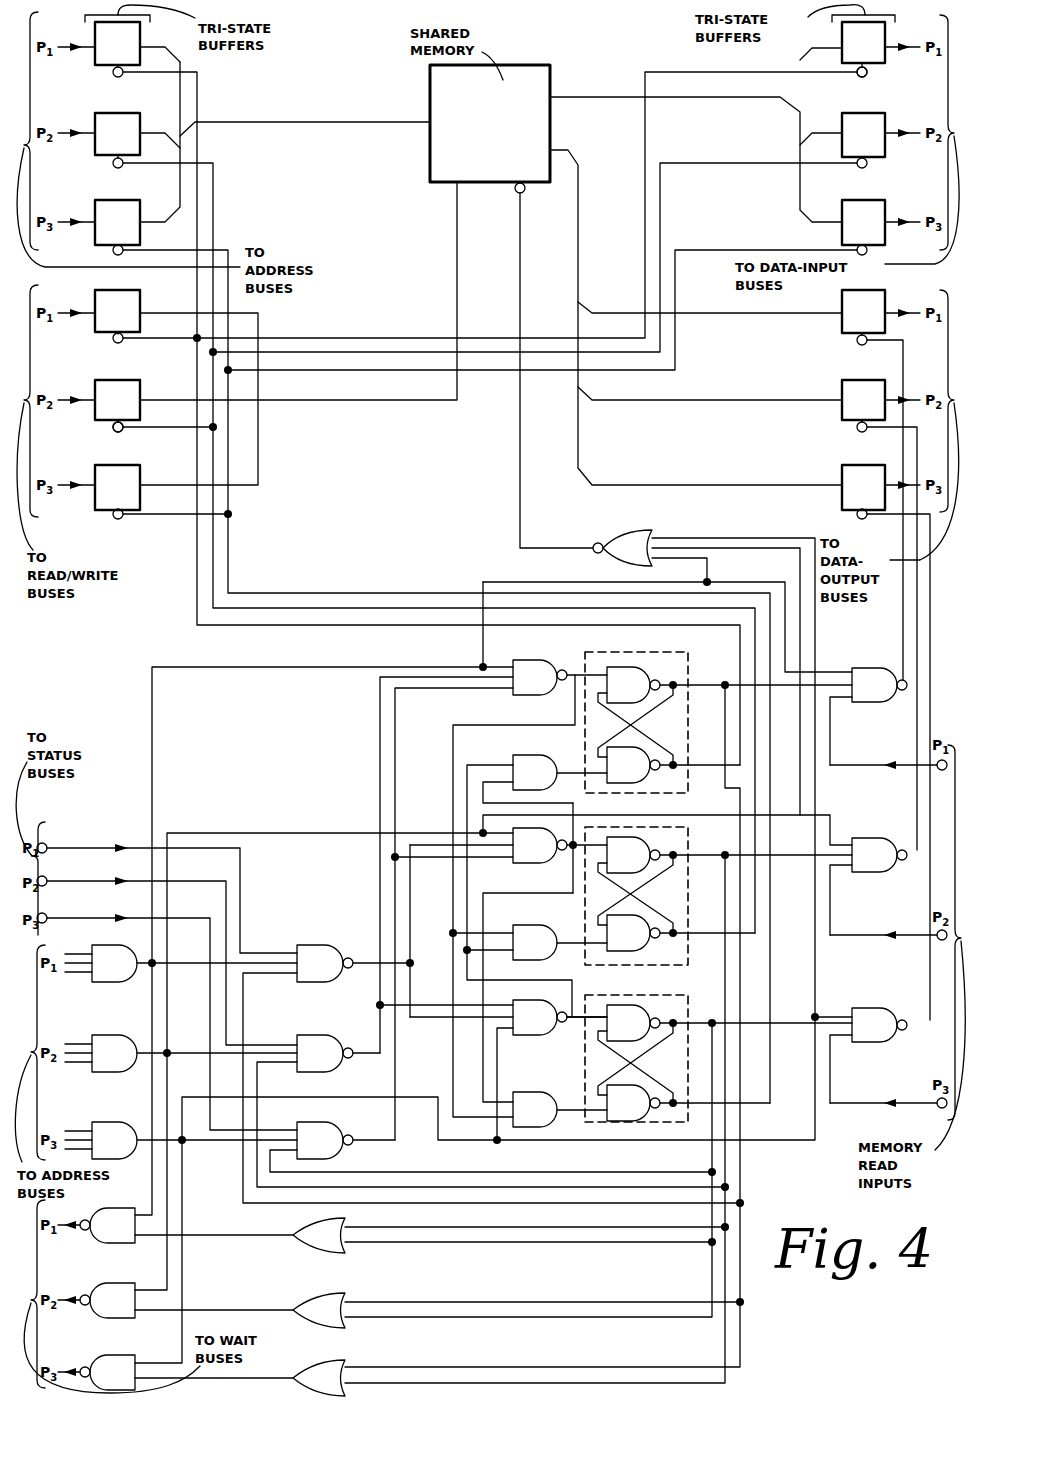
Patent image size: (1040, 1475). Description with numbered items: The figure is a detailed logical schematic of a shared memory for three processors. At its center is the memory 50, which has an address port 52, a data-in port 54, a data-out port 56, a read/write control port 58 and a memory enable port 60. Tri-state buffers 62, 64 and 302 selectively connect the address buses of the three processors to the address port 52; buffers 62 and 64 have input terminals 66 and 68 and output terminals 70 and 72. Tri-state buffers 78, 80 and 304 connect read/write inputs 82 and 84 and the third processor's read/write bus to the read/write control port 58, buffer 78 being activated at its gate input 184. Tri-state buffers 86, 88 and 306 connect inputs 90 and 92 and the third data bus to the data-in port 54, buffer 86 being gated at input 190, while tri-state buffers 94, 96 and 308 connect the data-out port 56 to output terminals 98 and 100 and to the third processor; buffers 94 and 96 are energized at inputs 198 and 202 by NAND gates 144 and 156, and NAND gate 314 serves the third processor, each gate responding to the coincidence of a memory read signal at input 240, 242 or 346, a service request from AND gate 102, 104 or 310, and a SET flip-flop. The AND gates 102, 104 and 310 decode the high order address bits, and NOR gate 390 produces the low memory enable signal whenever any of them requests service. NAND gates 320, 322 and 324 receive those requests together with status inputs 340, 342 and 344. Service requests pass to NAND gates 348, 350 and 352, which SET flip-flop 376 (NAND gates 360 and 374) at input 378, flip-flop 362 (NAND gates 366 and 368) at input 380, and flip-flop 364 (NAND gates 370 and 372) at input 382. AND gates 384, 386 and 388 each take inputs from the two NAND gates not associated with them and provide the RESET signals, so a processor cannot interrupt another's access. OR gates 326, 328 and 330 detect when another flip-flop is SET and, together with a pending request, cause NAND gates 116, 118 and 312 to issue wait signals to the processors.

The memory 50 is at (490, 123).
The address port 52 is at (421, 120).
The data-in port 54 is at (552, 96).
The data-out port 56 is at (552, 150).
The read/write control port 58 is at (455, 186).
The memory enable port 60 is at (525, 192).
The tri-state buffer 62 is at (117, 49).
The tri-state buffer 64 is at (117, 140).
The tri-state buffer 302 is at (117, 227).
The input terminal 66 is at (93, 46).
The input terminal 68 is at (93, 126).
The output terminal 70 is at (141, 46).
The output terminal 72 is at (142, 128).
The tri-state buffer 78 is at (117, 316).
The tri-state buffer 80 is at (117, 406).
The tri-state buffer 304 is at (117, 492).
The read/write input 82 is at (89, 310).
The read/write input 84 is at (89, 398).
The gate input 184 is at (112, 430).
The tri-state buffer 86 is at (863, 49).
The tri-state buffer 88 is at (863, 140).
The tri-state buffer 306 is at (863, 227).
The input 90 is at (888, 45).
The input 92 is at (889, 130).
The input 190 is at (868, 72).
The tri-state buffer 94 is at (863, 317).
The tri-state buffer 96 is at (863, 406).
The tri-state buffer 308 is at (863, 492).
The output terminal 98 is at (902, 303).
The output terminal 100 is at (889, 398).
The input 198 is at (857, 343).
The input 202 is at (857, 430).
The AND gate 102 is at (181, 963).
The AND gate 104 is at (181, 1053).
The AND gate 310 is at (181, 1140).
The NAND gate 116 is at (96, 1225).
The NAND gate 118 is at (96, 1300).
The NAND gate 312 is at (96, 1372).
The NAND gate 144 is at (868, 716).
The NAND gate 156 is at (868, 886).
The NAND gate 314 is at (868, 1055).
The memory read input 240 is at (938, 762).
The memory read input 242 is at (938, 932).
The memory read input 346 is at (938, 1108).
The NAND gate 320 is at (491, 1074).
The NAND gate 322 is at (491, 1111).
The NAND gate 324 is at (491, 1147).
The OR gate 326 is at (240, 1235).
The OR gate 328 is at (240, 1310).
The OR gate 330 is at (240, 1378).
The status input 340 is at (46, 846).
The status input 342 is at (46, 880).
The status input 344 is at (46, 917).
The NAND gate 348 is at (528, 888).
The NAND gate 350 is at (560, 845).
The NAND gate 352 is at (535, 952).
The NAND gate 360 is at (729, 685).
The NAND gate 374 is at (673, 765).
The NAND gate 366 is at (729, 855).
The NAND gate 368 is at (681, 933).
The NAND gate 370 is at (729, 1023).
The NAND gate 372 is at (688, 1103).
The flip-flop 362 is at (686, 855).
The flip-flop 364 is at (684, 1008).
The input 378 is at (600, 670).
The flip-flop 376 is at (668, 793).
The input 380 is at (600, 852).
The input 382 is at (600, 1010).
The AND gate 384 is at (560, 772).
The AND gate 386 is at (560, 942).
The AND gate 388 is at (560, 1109).
The NOR gate 390 is at (622, 548).